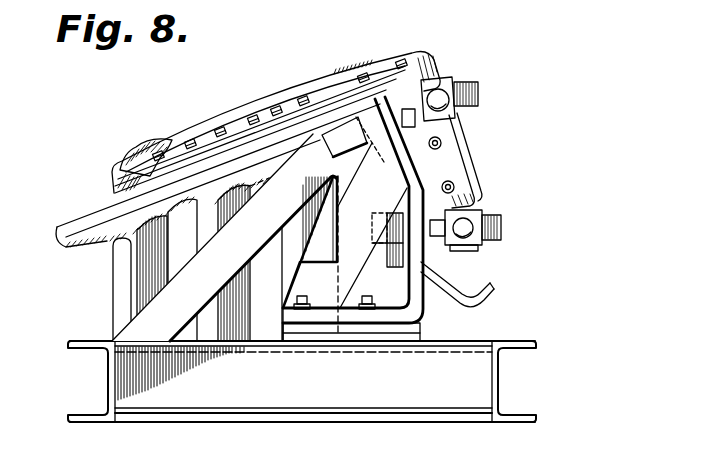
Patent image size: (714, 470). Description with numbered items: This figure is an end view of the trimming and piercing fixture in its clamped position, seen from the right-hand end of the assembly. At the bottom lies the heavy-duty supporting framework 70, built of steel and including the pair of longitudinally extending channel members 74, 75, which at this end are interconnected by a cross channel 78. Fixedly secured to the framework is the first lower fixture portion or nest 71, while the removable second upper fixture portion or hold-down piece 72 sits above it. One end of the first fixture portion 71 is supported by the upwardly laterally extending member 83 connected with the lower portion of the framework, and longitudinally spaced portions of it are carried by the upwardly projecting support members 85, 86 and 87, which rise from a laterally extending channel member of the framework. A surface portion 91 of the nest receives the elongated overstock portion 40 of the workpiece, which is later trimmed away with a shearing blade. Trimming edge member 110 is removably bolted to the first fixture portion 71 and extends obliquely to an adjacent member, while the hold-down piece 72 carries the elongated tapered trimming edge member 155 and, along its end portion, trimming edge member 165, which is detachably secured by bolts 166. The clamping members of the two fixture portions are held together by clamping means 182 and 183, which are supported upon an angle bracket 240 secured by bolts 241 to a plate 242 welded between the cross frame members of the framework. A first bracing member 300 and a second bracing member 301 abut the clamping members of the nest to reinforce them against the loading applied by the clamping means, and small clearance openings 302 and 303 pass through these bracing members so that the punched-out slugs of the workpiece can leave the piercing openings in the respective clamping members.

The supporting framework 70 is at (400, 426).
The first lower fixture portion or nest 71 is at (80, 202).
The second upper fixture portion or hold-down piece 72 is at (245, 80).
The channel member 74 is at (500, 380).
The channel member 75 is at (107, 377).
The cross channel 78 is at (287, 399).
The upwardly laterally extending member 83 is at (257, 247).
The support member 85 is at (113, 293).
The support member 86 is at (202, 243).
The support member 87 is at (296, 226).
The surface portion 91 is at (440, 281).
The overstock portion 40 is at (487, 291).
The trimming edge member 110 is at (183, 175).
The elongated tapered trimming edge member 155 is at (386, 78).
The trimming edge member 165 is at (458, 158).
The bolts 166 is at (441, 143).
The clamping means 182 is at (478, 113).
The clamping means 183 is at (520, 229).
The angle bracket 240 is at (420, 312).
The bolts 241 is at (310, 294).
The plate 242 is at (370, 333).
The first bracing member 300 is at (342, 149).
The second bracing member 301 is at (392, 248).
The clearance opening 302 is at (373, 151).
The clearance opening 303 is at (392, 213).